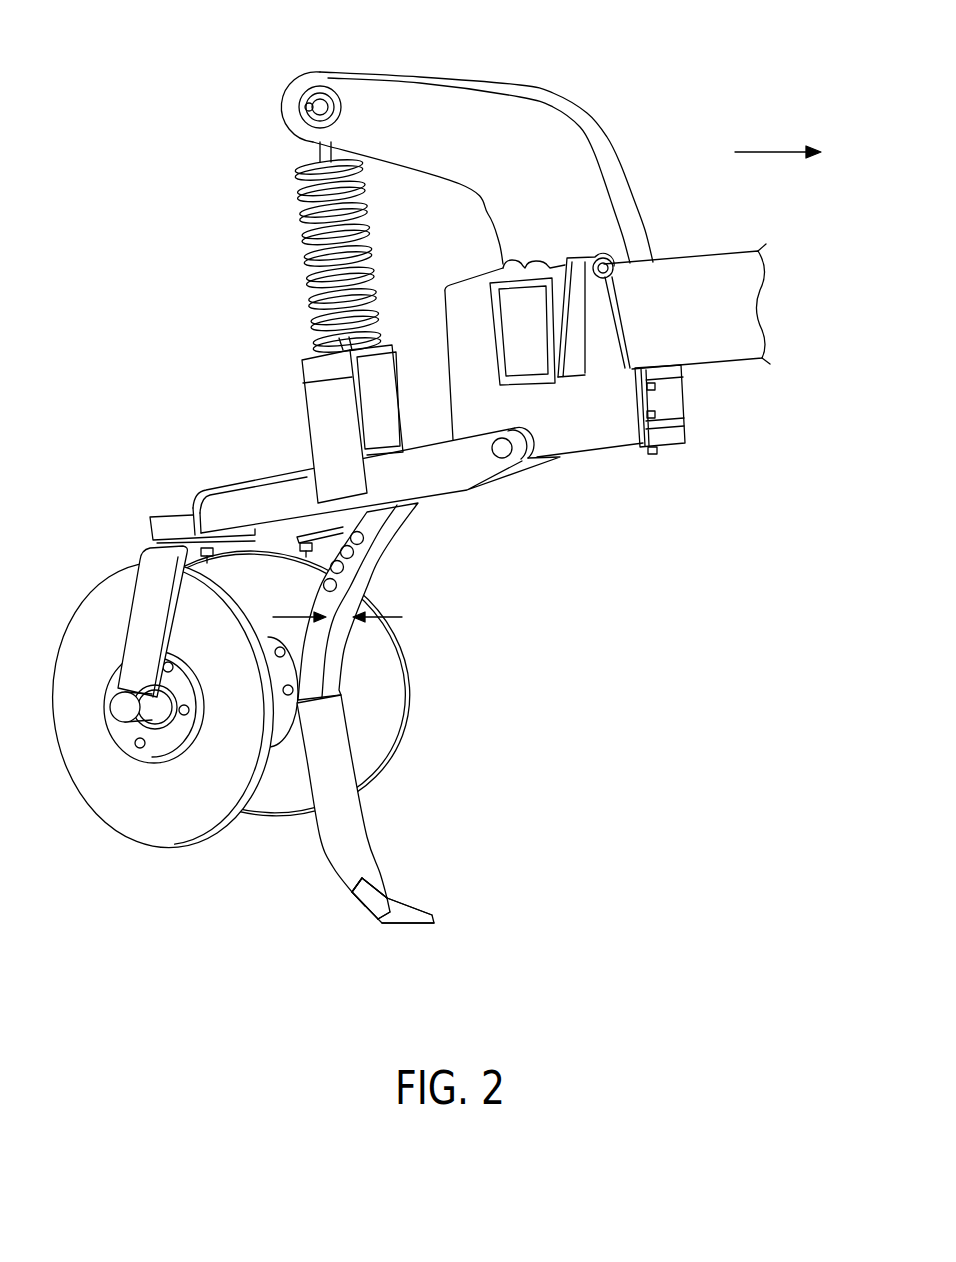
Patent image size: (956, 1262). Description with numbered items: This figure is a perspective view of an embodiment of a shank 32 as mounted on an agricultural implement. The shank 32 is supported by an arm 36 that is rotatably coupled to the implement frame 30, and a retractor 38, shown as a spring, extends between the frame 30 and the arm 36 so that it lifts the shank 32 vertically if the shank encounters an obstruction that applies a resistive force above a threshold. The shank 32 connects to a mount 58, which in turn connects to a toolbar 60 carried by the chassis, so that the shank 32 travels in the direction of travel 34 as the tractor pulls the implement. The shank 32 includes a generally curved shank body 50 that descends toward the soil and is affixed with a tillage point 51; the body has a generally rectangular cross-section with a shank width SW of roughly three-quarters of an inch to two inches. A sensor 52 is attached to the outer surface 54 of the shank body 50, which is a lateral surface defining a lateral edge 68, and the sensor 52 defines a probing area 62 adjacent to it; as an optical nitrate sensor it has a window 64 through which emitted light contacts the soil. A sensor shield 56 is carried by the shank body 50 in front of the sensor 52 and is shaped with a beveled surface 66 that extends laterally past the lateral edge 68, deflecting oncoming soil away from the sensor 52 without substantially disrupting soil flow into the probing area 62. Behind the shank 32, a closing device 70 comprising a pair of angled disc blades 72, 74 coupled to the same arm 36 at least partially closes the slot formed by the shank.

The implement frame 30 is at (437, 105).
The shank 32 is at (310, 878).
The direction of travel 34 is at (772, 148).
The arm 36 is at (467, 477).
The retractor 38 is at (307, 255).
The shank body 50 is at (335, 680).
The tillage point 51 is at (437, 917).
The sensor 52 is at (370, 932).
The outer surface 54 is at (358, 893).
The sensor shield 56 is at (413, 922).
The mount 58 is at (712, 413).
The toolbar 60 is at (727, 272).
The probing area 62 is at (355, 920).
The window 64 is at (380, 925).
The beveled surface 66 is at (390, 900).
The lateral edge 68 is at (380, 897).
The closing device 70 is at (152, 862).
The disc blade 72 is at (122, 803).
The disc blade 74 is at (398, 655).
The shank width SW is at (383, 607).